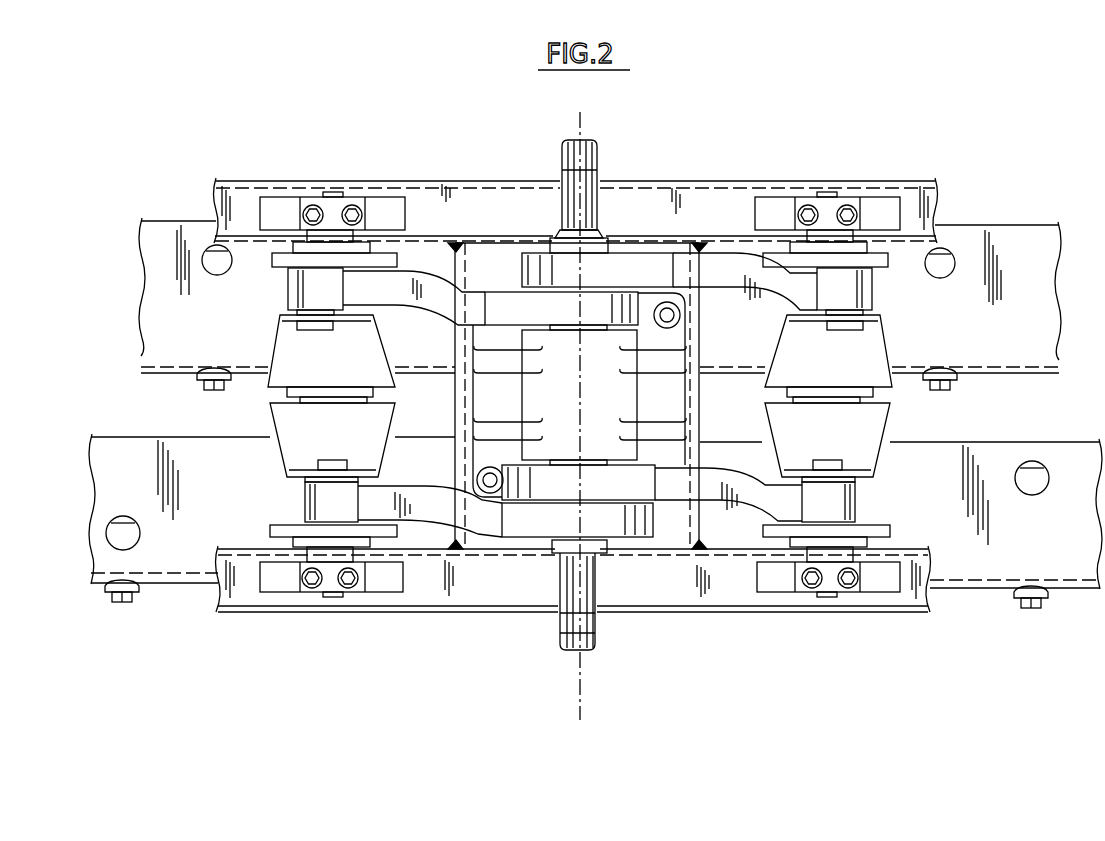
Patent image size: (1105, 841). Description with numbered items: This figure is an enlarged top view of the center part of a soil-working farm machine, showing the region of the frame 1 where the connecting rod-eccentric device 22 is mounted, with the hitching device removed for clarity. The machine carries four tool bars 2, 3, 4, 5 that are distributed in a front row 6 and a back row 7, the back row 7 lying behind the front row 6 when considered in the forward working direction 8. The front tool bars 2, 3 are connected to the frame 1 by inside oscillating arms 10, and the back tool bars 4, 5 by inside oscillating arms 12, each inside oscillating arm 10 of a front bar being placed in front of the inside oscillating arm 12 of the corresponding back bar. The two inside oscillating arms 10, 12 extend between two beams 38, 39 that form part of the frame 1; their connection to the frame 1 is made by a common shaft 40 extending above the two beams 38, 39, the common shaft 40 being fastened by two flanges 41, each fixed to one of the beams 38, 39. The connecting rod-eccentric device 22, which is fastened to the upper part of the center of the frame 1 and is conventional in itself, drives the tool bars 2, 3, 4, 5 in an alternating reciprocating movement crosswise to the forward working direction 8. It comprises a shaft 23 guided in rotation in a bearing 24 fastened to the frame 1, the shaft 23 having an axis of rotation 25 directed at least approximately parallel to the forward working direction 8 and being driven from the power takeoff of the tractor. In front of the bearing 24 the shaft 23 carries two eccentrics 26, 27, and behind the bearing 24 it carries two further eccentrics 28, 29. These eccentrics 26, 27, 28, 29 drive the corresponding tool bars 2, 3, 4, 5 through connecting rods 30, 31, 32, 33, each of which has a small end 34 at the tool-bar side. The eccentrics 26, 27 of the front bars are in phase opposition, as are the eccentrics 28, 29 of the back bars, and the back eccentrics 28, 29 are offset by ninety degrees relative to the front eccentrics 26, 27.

The frame 1 is at (712, 166).
The tool bar 2 is at (135, 450).
The tool bar 3 is at (1024, 443).
The tool bar 4 is at (155, 302).
The tool bar 5 is at (1023, 234).
The front row 6 is at (165, 598).
The back row 7 is at (166, 200).
The forward working direction 8 is at (658, 745).
The inside oscillating arm 10 is at (293, 446).
The inside oscillating arm 12 is at (287, 338).
The connecting rod-eccentric device 22 is at (673, 608).
The shaft 23 is at (560, 633).
The bearing 24 is at (592, 408).
The axis of rotation 25 is at (580, 698).
The eccentric 26 is at (522, 538).
The eccentric 27 is at (627, 498).
The eccentric 28 is at (507, 290).
The eccentric 29 is at (540, 252).
The connecting rod 30 is at (420, 494).
The connecting rod 31 is at (755, 497).
The connecting rod 32 is at (413, 308).
The connecting rod 33 is at (733, 288).
The small end 34 is at (298, 285).
The beam 38 is at (913, 600).
The beam 39 is at (917, 195).
The common shaft 40 is at (333, 598).
The flange 41 is at (338, 202).